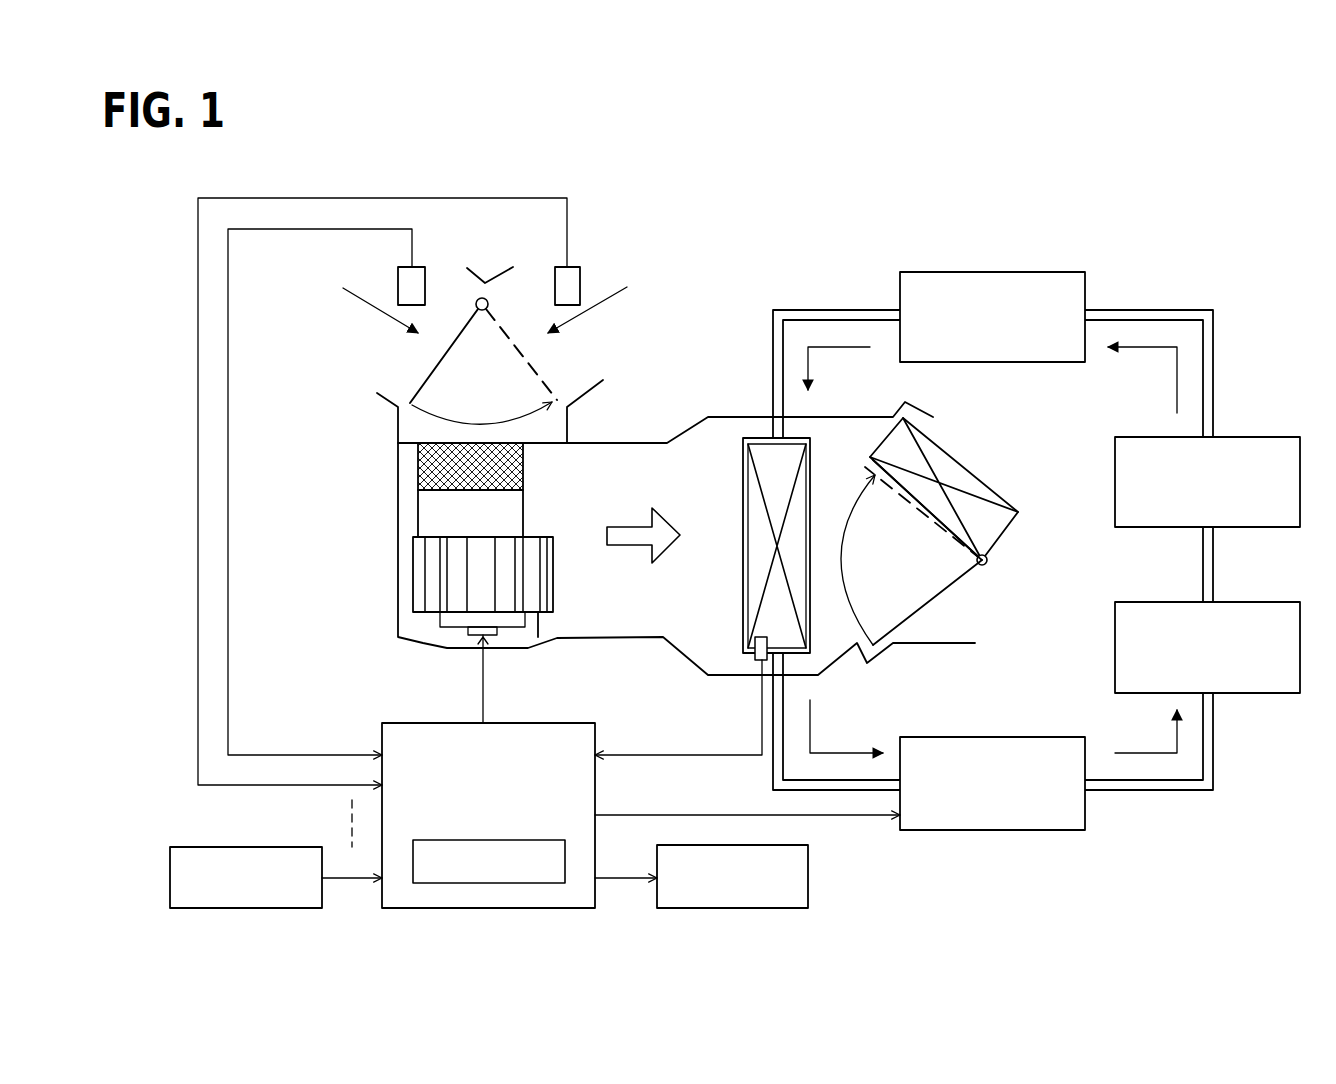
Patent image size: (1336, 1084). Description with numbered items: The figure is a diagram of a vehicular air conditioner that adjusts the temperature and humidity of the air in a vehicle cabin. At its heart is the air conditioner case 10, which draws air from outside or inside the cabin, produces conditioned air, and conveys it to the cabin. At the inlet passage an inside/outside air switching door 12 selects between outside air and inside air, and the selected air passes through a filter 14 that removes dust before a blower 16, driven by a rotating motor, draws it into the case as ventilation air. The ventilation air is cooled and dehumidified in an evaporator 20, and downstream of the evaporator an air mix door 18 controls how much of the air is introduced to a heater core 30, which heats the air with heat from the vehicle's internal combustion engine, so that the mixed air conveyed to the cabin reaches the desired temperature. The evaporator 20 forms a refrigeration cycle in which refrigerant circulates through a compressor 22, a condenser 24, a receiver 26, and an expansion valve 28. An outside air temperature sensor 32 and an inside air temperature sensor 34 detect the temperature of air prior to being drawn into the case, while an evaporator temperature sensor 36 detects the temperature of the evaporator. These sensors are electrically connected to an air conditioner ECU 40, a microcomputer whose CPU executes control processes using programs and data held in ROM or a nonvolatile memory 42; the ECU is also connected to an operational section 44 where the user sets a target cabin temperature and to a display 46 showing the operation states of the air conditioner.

The air conditioner case 10 is at (617, 443).
The inside/outside air switching door 12 is at (423, 380).
The filter 14 is at (427, 468).
The blower 16 is at (415, 573).
The air mix door 18 is at (937, 602).
The evaporator 20 is at (762, 438).
The compressor 22 is at (995, 737).
The condenser 24 is at (1240, 602).
The receiver 26 is at (1238, 437).
The expansion valve 28 is at (995, 272).
The heater core 30 is at (950, 450).
The outside air temperature sensor 32 is at (398, 280).
The inside air temperature sensor 34 is at (580, 278).
The evaporator temperature sensor 36 is at (757, 657).
The air conditioner ECU 40 is at (537, 723).
The nonvolatile memory 42 is at (538, 840).
The operational section 44 is at (245, 847).
The display 46 is at (730, 868).